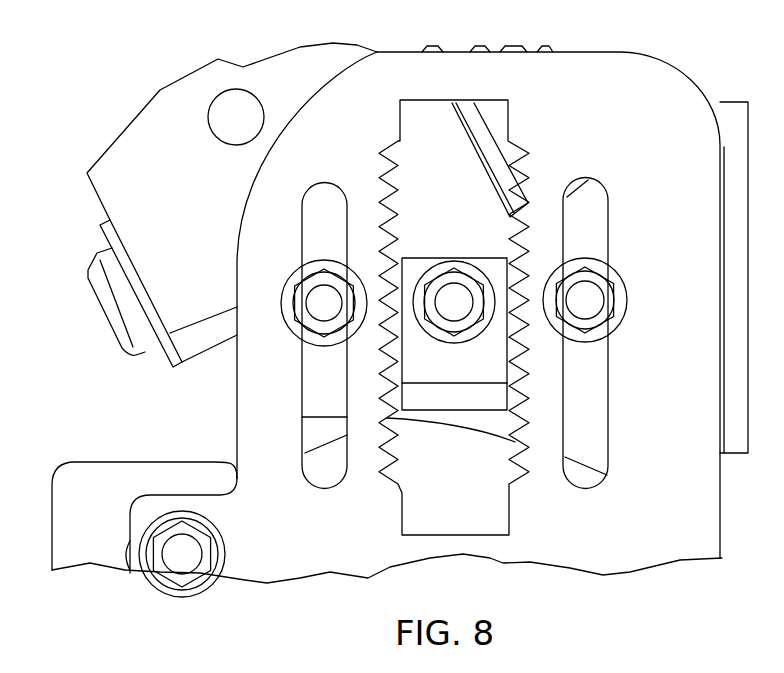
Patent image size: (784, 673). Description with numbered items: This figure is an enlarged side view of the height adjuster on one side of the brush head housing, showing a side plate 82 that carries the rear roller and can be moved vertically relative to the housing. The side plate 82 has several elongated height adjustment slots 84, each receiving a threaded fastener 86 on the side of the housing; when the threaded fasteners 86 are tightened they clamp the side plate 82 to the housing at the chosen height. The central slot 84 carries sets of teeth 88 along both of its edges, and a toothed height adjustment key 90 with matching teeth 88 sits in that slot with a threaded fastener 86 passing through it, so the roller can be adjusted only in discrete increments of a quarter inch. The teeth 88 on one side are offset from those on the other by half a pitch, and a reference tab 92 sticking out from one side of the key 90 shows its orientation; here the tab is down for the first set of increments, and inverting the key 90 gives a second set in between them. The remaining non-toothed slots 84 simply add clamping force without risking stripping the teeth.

The side plate 82 is at (600, 83).
The height adjustment slot 84 is at (466, 100).
The threaded fastener 86 is at (315, 303).
The teeth 88 is at (388, 248).
The height adjustment key 90 is at (412, 267).
The reference tab 92 is at (463, 398).